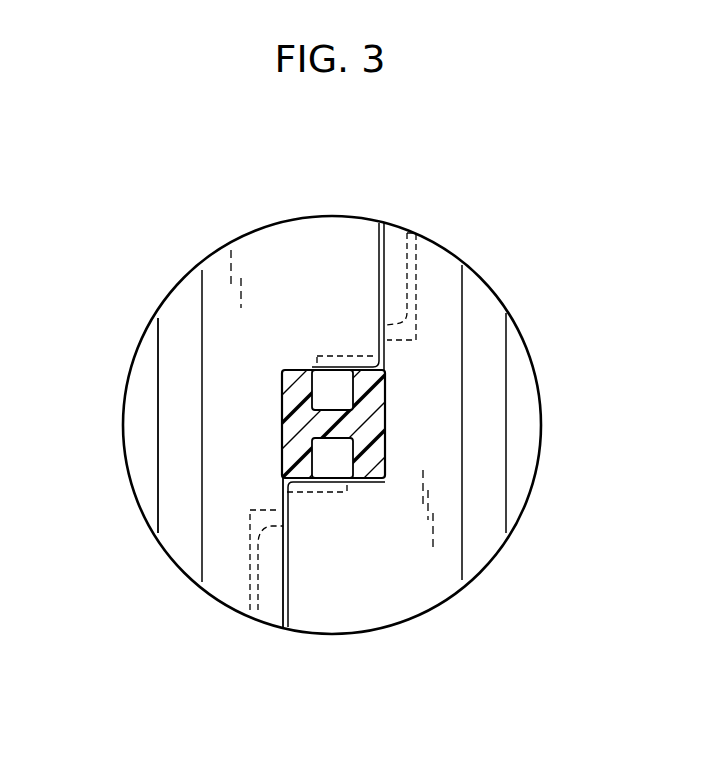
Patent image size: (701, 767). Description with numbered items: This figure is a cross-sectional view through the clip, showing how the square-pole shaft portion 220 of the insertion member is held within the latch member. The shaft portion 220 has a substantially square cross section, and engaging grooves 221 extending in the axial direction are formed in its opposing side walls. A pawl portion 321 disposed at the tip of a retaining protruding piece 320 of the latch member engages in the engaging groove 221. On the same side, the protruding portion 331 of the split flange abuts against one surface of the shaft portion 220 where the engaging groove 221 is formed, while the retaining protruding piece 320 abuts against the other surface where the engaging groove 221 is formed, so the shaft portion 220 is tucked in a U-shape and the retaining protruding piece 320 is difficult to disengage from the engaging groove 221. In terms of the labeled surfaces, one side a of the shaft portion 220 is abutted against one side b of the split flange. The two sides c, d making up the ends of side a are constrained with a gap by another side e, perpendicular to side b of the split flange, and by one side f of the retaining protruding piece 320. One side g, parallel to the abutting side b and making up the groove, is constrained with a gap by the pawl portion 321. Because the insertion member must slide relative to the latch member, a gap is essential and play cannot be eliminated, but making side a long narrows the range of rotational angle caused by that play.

The protruding portion 331 is at (310, 230).
The retaining protruding piece 320 is at (343, 357).
The shaft portion 220 is at (387, 458).
The pawl portion 321 is at (282, 452).
The engaging groove 221 is at (352, 394).
The one side of the shaft portion a is at (387, 437).
The one side of the split flange b is at (380, 277).
The side making up an end of side a c is at (371, 363).
The side making up an end of side a d is at (320, 450).
The another side of the split flange e is at (338, 445).
The one side of the retaining protruding piece f is at (386, 382).
The one side making up the groove g is at (387, 428).